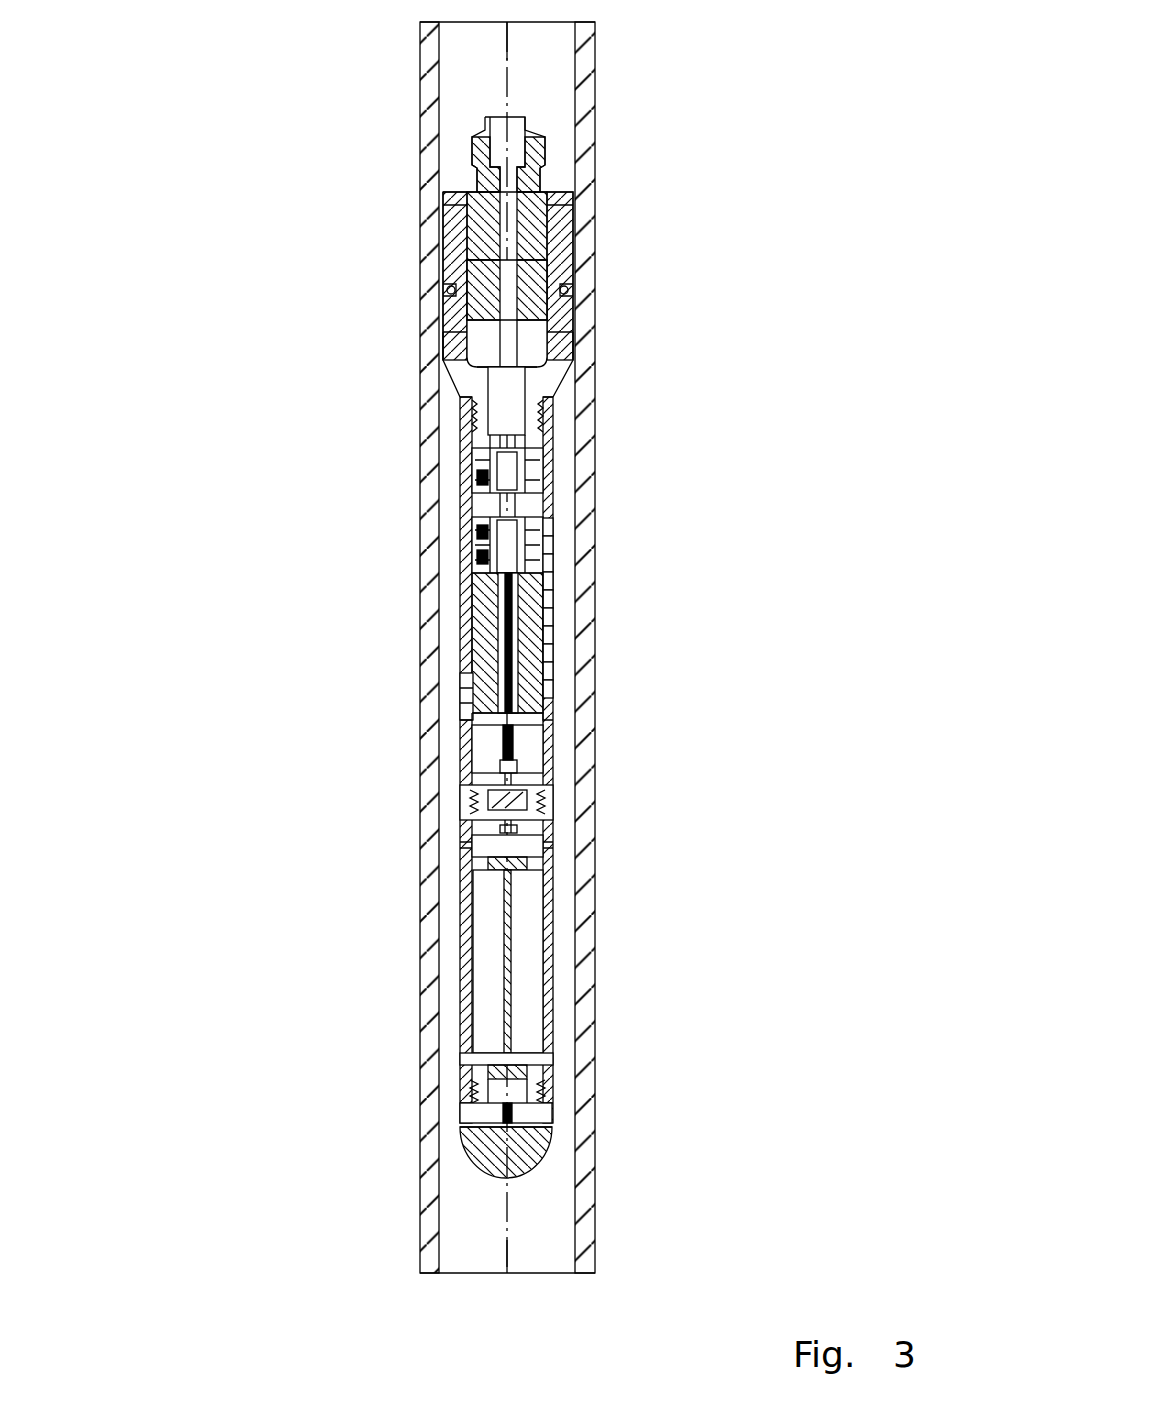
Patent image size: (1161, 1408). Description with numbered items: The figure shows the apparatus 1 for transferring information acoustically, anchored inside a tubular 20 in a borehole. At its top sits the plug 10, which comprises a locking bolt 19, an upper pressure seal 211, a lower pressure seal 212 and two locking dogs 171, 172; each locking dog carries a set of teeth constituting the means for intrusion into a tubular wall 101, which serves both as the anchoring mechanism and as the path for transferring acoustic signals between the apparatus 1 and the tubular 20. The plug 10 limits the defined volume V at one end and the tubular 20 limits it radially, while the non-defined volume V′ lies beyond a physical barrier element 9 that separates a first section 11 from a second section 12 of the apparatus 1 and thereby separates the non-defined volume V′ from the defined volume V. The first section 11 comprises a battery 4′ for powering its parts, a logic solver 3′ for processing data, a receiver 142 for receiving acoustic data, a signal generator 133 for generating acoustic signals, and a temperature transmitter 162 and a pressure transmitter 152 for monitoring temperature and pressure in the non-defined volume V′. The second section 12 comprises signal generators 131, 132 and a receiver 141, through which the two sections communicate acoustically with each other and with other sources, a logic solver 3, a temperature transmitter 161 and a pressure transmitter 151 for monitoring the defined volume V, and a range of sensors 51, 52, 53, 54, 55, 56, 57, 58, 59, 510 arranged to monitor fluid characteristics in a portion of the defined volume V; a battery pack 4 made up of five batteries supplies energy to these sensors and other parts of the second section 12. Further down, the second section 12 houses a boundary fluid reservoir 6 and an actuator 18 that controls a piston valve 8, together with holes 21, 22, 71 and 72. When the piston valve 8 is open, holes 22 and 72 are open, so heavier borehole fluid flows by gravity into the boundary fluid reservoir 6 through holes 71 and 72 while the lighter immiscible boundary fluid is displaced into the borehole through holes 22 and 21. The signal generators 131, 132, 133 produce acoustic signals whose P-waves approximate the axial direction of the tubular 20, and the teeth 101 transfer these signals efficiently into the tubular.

The apparatus 1 is at (562, 870).
The first section 11 is at (558, 477).
The second section 12 is at (458, 592).
The logic solver 3 is at (488, 650).
The logic solver 3′ is at (527, 445).
The battery pack 4 is at (568, 827).
The battery 4′ is at (548, 440).
The sensor 51 is at (553, 527).
The sensor 52 is at (553, 540).
The sensor 53 is at (553, 560).
The sensor 54 is at (553, 578).
The sensor 55 is at (553, 596).
The sensor 56 is at (553, 614).
The sensor 57 is at (553, 632).
The sensor 58 is at (553, 650).
The sensor 59 is at (553, 668).
The sensor 510 is at (553, 686).
The boundary fluid reservoir 6 is at (483, 967).
The piston valve 8 is at (503, 950).
The barrier element 9 is at (478, 510).
The plug 10 is at (457, 177).
The actuator 18 is at (467, 803).
The locking bolt 19 is at (537, 262).
The tubular 20 is at (440, 330).
The hole 21 is at (462, 847).
The hole 22 is at (490, 868).
The hole 71 is at (460, 1125).
The hole 72 is at (475, 1082).
The means for intrusion into a tubular wall 101 is at (440, 300).
The signal generator 131 is at (478, 590).
The signal generator 132 is at (477, 533).
The signal generator 133 is at (474, 480).
The receiver 141 is at (545, 492).
The receiver 142 is at (545, 455).
The pressure transmitter 151 is at (473, 722).
The pressure transmitter 152 is at (550, 362).
The temperature transmitter 161 is at (460, 678).
The temperature transmitter 162 is at (548, 315).
The locking dog 171 is at (440, 231).
The locking dog 172 is at (560, 240).
The upper pressure seal 211 is at (440, 208).
The lower pressure seal 212 is at (440, 358).
The defined volume V is at (533, 1247).
The non-defined volume V′ is at (508, 58).